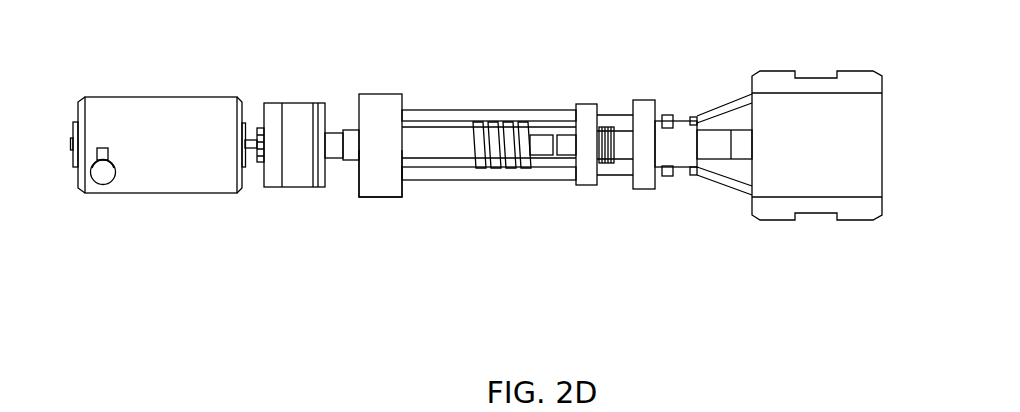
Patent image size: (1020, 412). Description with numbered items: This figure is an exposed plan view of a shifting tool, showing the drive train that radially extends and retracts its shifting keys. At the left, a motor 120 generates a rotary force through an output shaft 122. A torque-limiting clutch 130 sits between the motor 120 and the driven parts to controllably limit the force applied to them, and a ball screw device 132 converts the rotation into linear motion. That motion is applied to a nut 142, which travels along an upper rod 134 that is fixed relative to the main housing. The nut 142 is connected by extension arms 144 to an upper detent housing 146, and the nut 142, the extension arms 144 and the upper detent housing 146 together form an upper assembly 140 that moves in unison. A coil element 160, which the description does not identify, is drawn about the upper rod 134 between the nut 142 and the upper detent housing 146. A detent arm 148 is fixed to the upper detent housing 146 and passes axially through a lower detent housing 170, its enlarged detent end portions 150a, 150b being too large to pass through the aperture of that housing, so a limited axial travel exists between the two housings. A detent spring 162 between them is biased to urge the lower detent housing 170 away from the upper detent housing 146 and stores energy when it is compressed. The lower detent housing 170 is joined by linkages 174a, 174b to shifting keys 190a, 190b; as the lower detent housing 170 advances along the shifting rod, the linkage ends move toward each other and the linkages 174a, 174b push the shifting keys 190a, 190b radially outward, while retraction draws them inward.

The motor 120 is at (148, 103).
The output shaft 122 is at (250, 140).
The torque-limiting clutch 130 is at (297, 110).
The ball screw device 132 is at (352, 135).
The upper rod 134 is at (540, 150).
The upper assembly 140 is at (382, 98).
The nut 142 is at (377, 193).
The extension arms 144 is at (438, 110).
The upper detent housing 146 is at (588, 104).
The detent arm 148 is at (613, 170).
The detent end portion 150a is at (670, 115).
The detent end portion 150b is at (670, 176).
The compression spring 160 is at (508, 122).
The detent spring 162 is at (603, 127).
The lower detent housing 170 is at (645, 100).
The linkage 174a is at (733, 97).
The linkage 174b is at (733, 197).
The shifting key 190a is at (862, 71).
The shifting key 190b is at (860, 220).